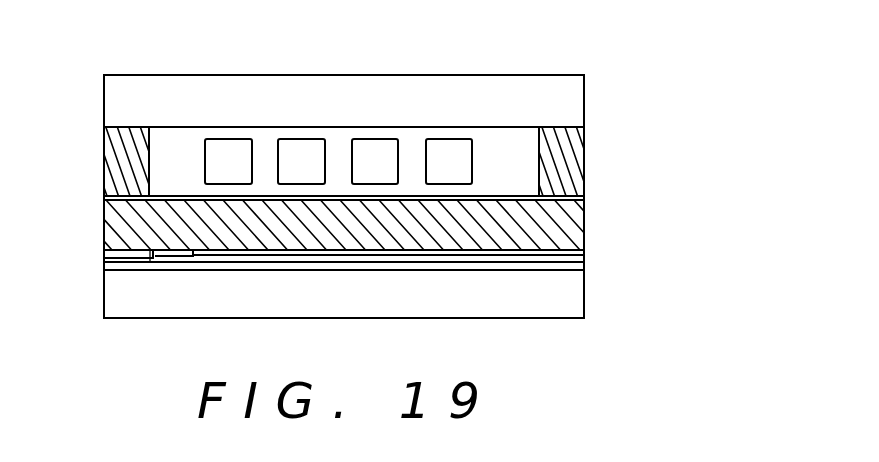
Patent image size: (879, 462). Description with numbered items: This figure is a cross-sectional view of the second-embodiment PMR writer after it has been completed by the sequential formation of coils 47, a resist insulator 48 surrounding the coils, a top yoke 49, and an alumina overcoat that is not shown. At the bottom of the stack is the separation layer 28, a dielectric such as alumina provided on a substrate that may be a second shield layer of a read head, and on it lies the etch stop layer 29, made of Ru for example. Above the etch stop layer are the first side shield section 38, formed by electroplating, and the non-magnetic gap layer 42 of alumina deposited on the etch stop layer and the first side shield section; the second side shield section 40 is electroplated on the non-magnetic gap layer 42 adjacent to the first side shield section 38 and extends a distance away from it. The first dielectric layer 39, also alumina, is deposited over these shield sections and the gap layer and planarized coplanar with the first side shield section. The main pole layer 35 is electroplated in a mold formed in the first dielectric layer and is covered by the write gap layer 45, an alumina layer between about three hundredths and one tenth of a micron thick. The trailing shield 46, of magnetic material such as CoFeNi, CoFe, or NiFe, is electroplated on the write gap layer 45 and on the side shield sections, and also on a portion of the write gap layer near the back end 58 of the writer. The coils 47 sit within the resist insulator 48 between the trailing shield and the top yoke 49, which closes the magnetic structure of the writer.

The separation layer 28 is at (568, 297).
The etch stop layer 29 is at (568, 262).
The main pole layer 35 is at (115, 226).
The first side shield section 38 is at (115, 257).
The first dielectric layer 39 is at (584, 252).
The second side shield section 40 is at (193, 256).
The non-magnetic gap layer 42 is at (153, 258).
The write gap layer 45 is at (115, 197).
The trailing shield 46 is at (115, 156).
The coils 47 is at (308, 150).
The resist insulator 48 is at (499, 170).
The top yoke 49 is at (573, 98).
The back end 58 is at (585, 213).